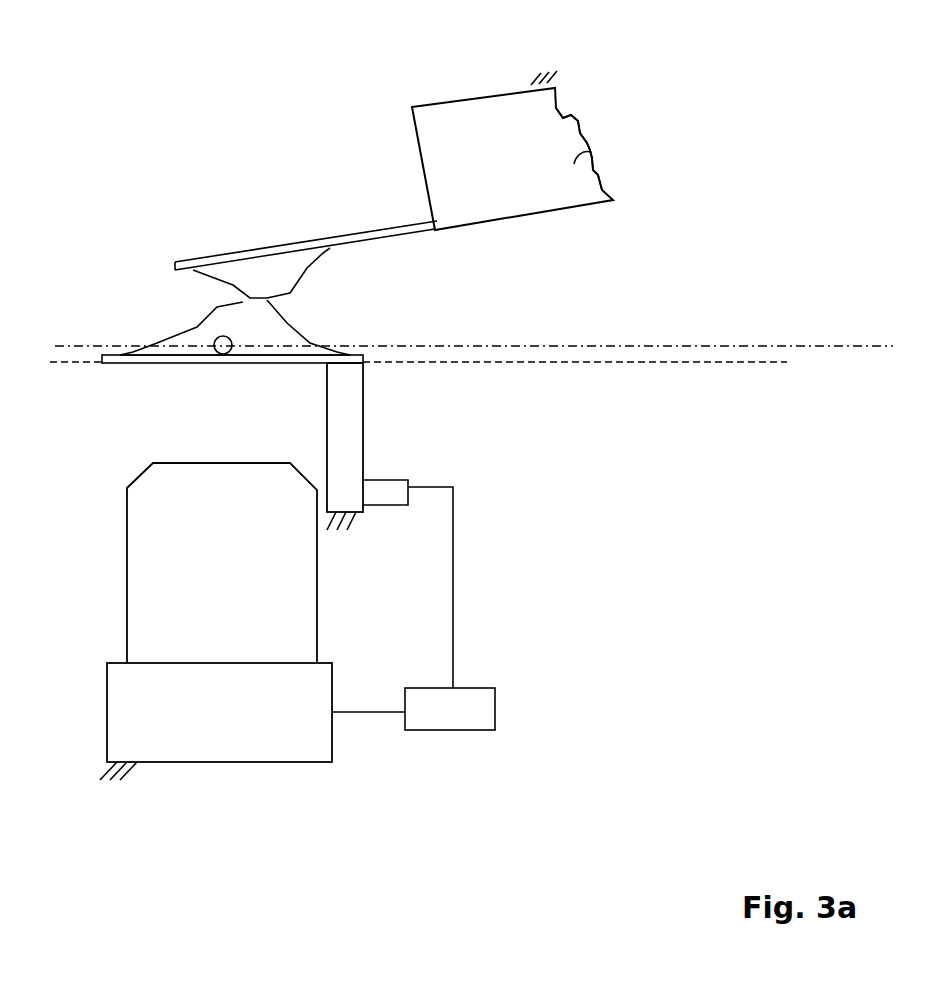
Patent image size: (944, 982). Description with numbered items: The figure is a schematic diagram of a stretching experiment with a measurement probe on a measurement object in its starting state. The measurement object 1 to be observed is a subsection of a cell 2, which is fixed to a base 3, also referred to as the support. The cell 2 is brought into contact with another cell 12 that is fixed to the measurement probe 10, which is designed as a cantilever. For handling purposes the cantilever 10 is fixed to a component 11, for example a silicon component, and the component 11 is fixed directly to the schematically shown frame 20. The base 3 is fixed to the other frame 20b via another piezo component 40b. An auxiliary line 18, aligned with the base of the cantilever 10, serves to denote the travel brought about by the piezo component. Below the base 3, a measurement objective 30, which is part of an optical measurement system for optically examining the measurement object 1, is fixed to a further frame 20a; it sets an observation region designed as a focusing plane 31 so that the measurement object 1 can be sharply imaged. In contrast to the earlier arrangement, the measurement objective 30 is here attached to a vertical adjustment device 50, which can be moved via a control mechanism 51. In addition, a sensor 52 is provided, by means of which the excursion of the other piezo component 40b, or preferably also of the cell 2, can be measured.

The measurement object 1 is at (210, 353).
The cell 2 is at (280, 330).
The base 3 is at (270, 363).
The measurement probe 10 is at (237, 258).
The component 11 is at (593, 148).
The another cell 12 is at (227, 275).
The auxiliary line 18 is at (587, 363).
The frame 20 is at (553, 78).
The further frame 20a is at (110, 783).
The other frame 20b is at (353, 527).
The measurement objective 30 is at (148, 597).
The focusing plane 31 is at (630, 345).
The other piezo component 40b is at (353, 427).
The vertical adjustment device 50 is at (207, 747).
The control mechanism 51 is at (482, 713).
The sensor 52 is at (397, 488).